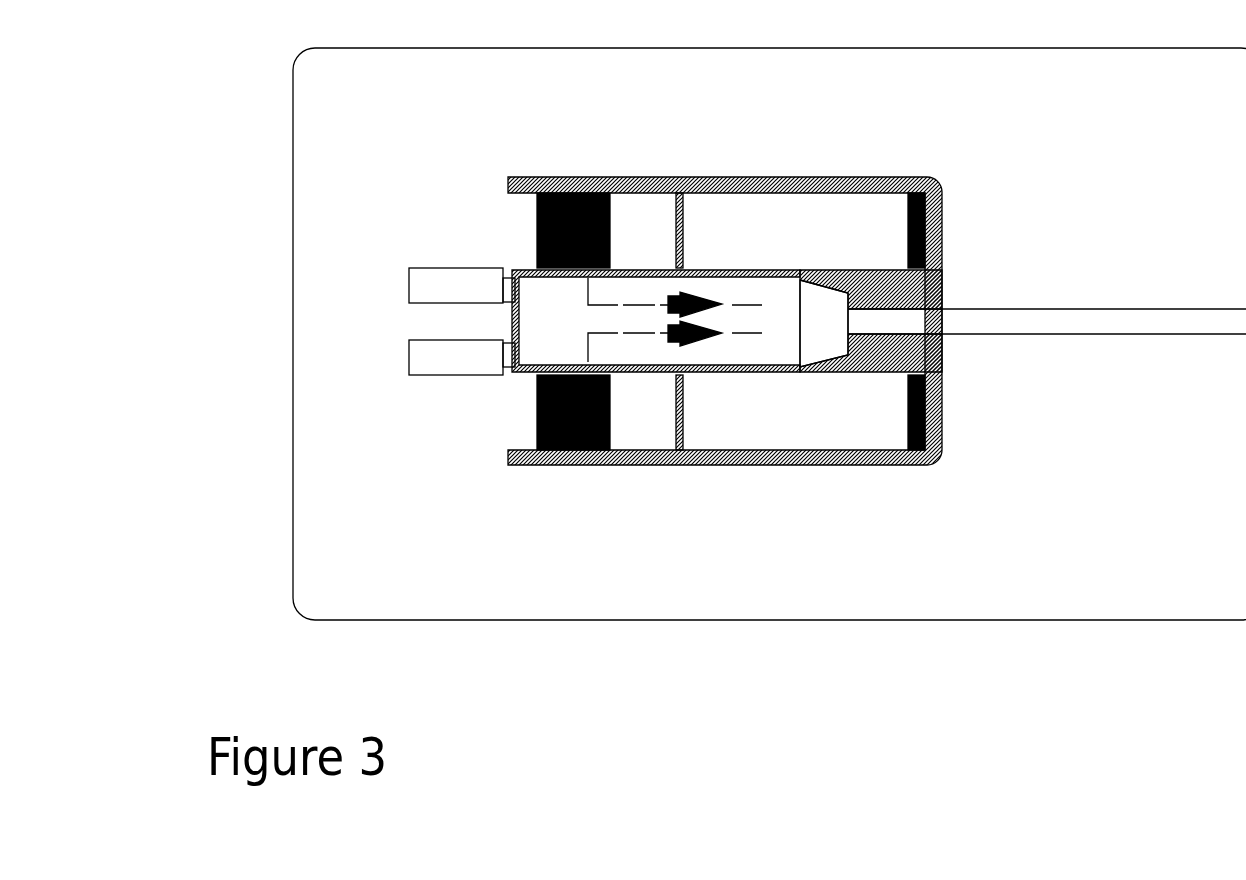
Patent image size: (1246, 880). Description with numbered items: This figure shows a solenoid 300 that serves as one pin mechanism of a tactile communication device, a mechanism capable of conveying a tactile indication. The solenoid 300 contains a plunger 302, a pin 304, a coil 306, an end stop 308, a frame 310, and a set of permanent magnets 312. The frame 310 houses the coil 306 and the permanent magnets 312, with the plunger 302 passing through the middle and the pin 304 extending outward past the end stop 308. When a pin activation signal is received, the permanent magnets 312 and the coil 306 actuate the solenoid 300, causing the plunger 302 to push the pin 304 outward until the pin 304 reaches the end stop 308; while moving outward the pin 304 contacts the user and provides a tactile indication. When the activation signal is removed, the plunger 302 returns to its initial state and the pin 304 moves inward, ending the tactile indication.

The solenoid 300 is at (293, 82).
The plunger 302 is at (437, 293).
The pin 304 is at (1055, 323).
The coil 306 is at (848, 208).
The end stop 308 is at (937, 282).
The frame 310 is at (775, 457).
The permanent magnets 312 is at (665, 111).